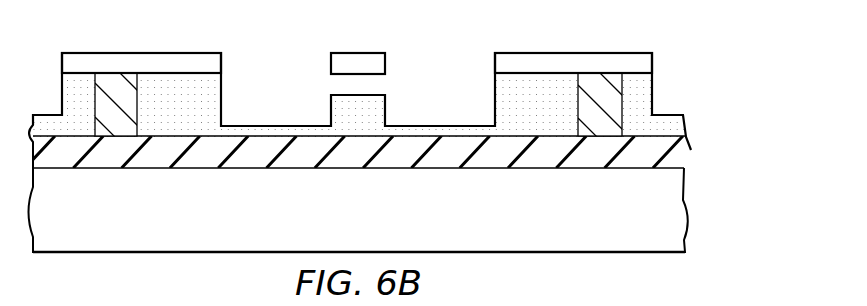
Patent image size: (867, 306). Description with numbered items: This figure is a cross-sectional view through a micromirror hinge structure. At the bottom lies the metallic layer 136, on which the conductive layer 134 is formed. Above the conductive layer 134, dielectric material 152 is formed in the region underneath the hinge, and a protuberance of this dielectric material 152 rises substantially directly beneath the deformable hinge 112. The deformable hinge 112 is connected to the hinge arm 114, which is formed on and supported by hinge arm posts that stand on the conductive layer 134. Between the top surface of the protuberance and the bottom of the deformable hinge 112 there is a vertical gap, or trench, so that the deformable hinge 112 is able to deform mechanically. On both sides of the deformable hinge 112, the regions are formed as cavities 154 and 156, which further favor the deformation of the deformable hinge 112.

The deformable hinge 112 is at (353, 62).
The hinge arm 114 is at (153, 62).
The conductive layer 134 is at (688, 156).
The metallic layer 136 is at (378, 222).
The dielectric material 152 is at (212, 98).
The cavity 154 is at (271, 56).
The cavity 156 is at (449, 57).